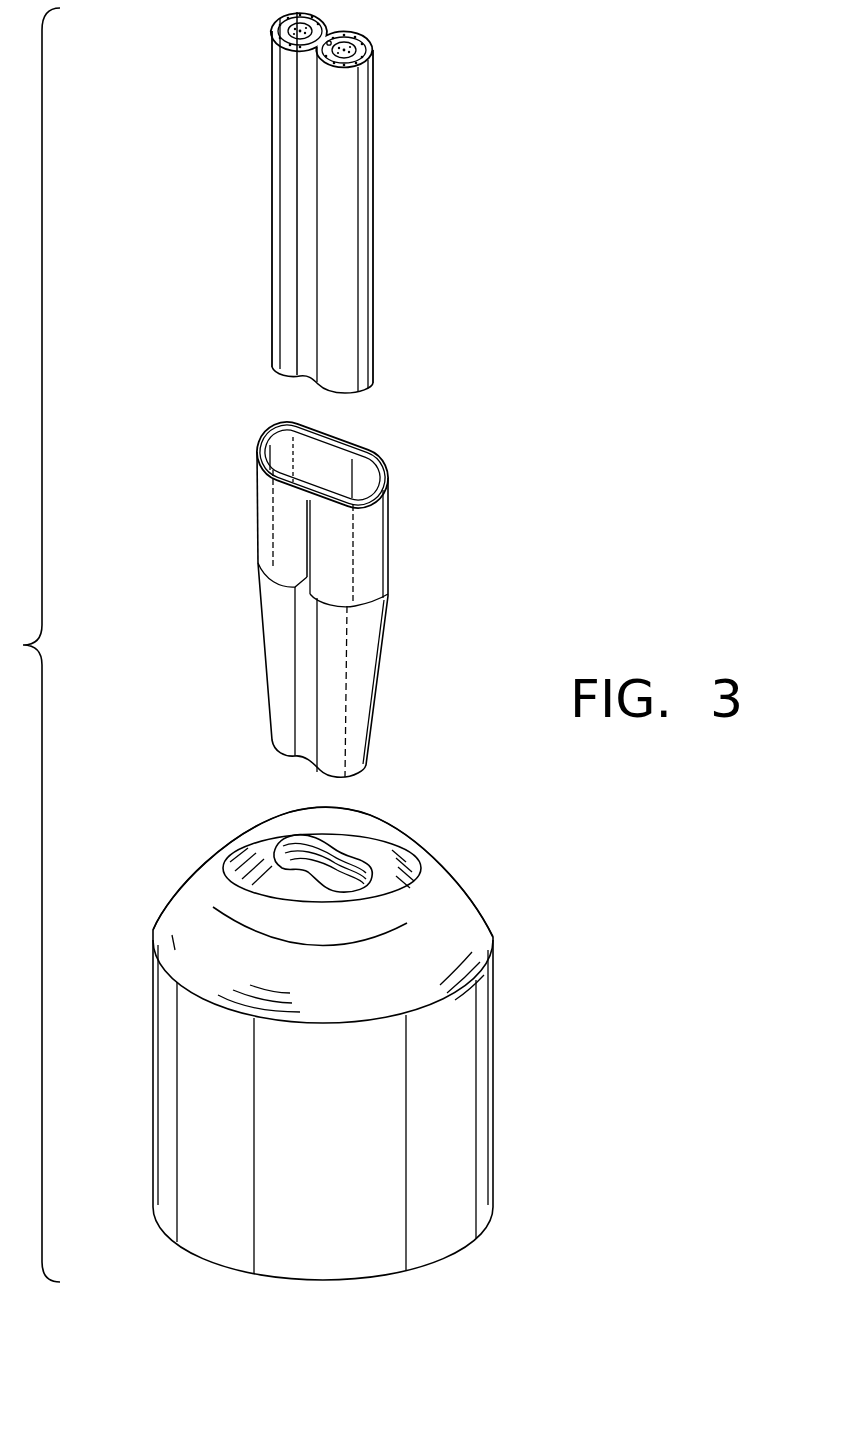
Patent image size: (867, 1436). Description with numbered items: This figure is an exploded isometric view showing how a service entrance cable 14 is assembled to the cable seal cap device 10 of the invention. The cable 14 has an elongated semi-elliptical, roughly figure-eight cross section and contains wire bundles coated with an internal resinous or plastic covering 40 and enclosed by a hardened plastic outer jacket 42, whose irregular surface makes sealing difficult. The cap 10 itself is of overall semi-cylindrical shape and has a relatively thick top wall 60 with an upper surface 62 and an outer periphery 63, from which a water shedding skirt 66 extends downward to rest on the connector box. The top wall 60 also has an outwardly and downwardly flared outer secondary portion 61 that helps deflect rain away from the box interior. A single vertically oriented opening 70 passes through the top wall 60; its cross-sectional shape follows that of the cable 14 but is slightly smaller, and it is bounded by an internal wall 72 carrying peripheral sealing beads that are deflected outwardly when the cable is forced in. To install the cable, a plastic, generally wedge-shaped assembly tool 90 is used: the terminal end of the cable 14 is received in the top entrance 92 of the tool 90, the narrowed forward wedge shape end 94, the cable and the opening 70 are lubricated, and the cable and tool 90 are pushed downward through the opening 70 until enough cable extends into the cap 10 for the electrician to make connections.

The cap device 10 is at (470, 922).
The service entrance cable 14 is at (385, 216).
The internal resinous or plastic covering 40 is at (288, 268).
The outer jacket 42 is at (343, 10).
The top wall 60 is at (346, 1030).
The outer secondary portion 61 is at (233, 958).
The upper surface 62 is at (370, 840).
The outer periphery 63 is at (445, 990).
The water shedding skirt 66 is at (476, 1113).
The opening 70 is at (285, 860).
The internal wall 72 is at (297, 843).
The assembly tool 90 is at (330, 599).
The top entrance 92 is at (325, 473).
The forward wedge shape end 94 is at (282, 716).